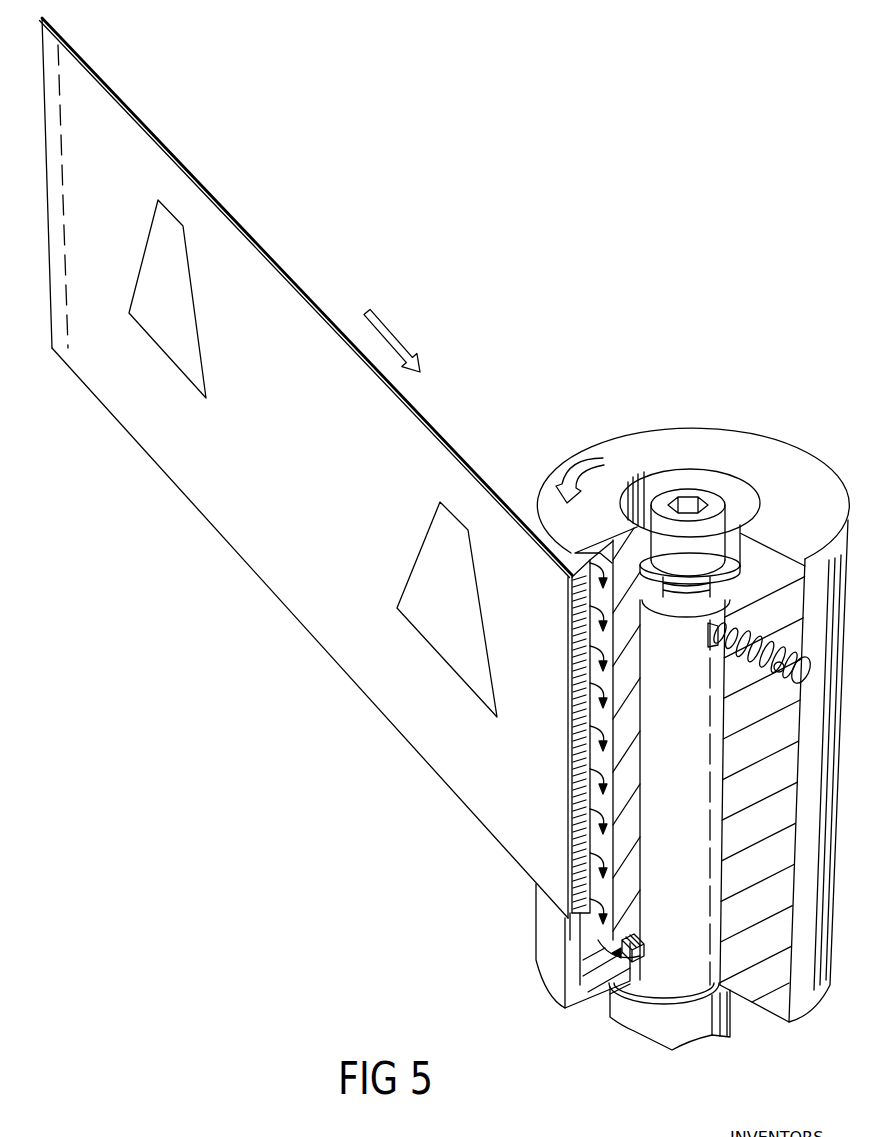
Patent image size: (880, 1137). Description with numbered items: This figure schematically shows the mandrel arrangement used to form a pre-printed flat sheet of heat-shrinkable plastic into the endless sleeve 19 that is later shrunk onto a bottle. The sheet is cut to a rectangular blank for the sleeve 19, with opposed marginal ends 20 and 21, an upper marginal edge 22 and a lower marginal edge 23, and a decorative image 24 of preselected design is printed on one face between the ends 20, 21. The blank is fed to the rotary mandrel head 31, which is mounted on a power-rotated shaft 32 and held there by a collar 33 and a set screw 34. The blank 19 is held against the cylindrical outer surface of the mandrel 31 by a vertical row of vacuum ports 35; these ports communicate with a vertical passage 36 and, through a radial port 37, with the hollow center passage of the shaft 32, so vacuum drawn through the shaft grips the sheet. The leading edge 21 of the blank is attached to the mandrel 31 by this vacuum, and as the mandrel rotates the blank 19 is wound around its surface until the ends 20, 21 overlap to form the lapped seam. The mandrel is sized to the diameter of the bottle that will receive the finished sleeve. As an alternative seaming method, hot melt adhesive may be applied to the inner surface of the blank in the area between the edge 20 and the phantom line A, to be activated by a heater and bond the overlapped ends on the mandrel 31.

The sleeve 19 is at (293, 500).
The marginal end 20 is at (48, 186).
The phantom line A is at (67, 140).
The marginal end 21 is at (568, 735).
The upper marginal edge 22 is at (318, 300).
The lower marginal edge 23 is at (266, 581).
The decorative image 24 is at (203, 352).
The rotary mandrel head 31 is at (796, 446).
The shaft 32 is at (695, 805).
The collar 33 is at (758, 502).
The set screw 34 is at (750, 640).
The vacuum ports 35 is at (582, 572).
The vertical passage 36 is at (608, 722).
The radial port 37 is at (643, 940).